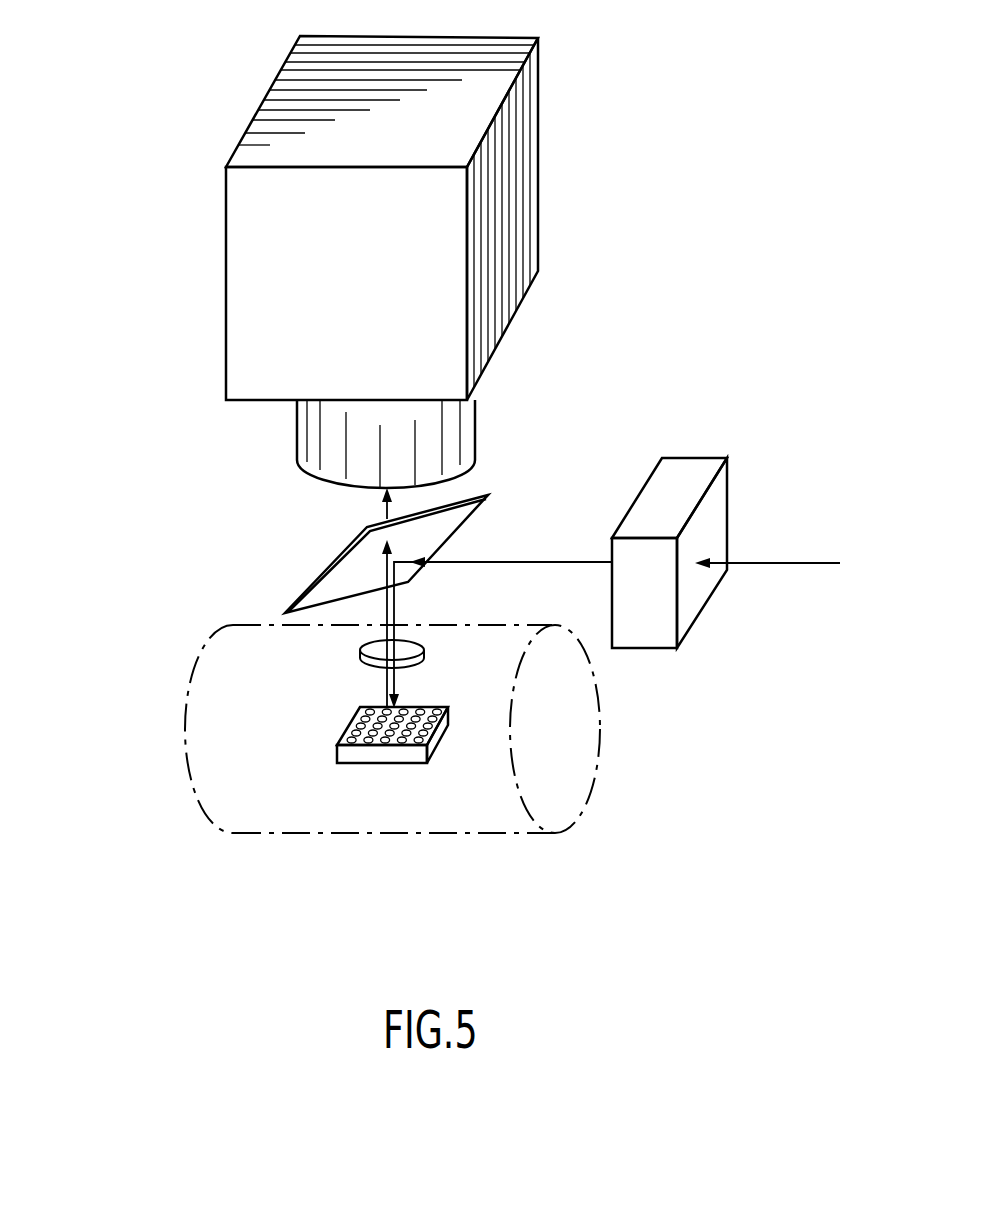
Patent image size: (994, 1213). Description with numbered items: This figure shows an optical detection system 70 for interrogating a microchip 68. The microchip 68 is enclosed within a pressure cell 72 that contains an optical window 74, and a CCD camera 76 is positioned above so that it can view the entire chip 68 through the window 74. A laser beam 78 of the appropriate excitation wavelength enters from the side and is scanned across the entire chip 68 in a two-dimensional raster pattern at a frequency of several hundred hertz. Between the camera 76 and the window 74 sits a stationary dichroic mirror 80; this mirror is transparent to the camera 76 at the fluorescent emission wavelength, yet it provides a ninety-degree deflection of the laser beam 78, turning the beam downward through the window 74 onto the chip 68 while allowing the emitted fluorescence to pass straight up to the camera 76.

The optical detection system 70 is at (132, 280).
The CCD camera 76 is at (517, 170).
The stationary dichroic mirror 80 is at (330, 562).
The laser beam 78 is at (752, 563).
The pressure cell 72 is at (188, 685).
The optical window 74 is at (370, 665).
The microchip 68 is at (408, 763).